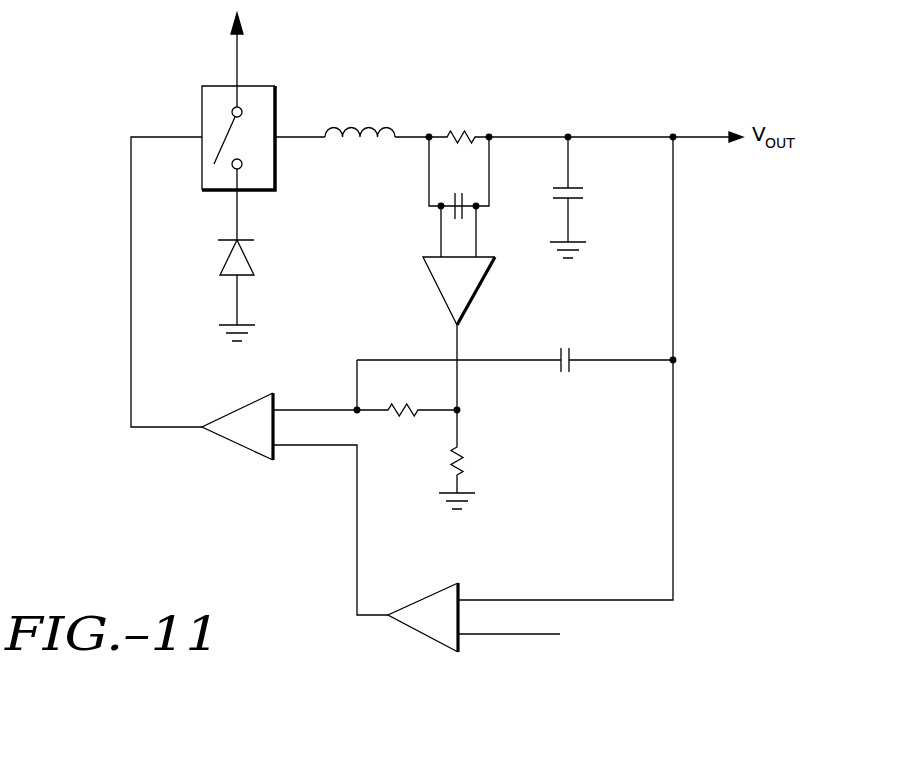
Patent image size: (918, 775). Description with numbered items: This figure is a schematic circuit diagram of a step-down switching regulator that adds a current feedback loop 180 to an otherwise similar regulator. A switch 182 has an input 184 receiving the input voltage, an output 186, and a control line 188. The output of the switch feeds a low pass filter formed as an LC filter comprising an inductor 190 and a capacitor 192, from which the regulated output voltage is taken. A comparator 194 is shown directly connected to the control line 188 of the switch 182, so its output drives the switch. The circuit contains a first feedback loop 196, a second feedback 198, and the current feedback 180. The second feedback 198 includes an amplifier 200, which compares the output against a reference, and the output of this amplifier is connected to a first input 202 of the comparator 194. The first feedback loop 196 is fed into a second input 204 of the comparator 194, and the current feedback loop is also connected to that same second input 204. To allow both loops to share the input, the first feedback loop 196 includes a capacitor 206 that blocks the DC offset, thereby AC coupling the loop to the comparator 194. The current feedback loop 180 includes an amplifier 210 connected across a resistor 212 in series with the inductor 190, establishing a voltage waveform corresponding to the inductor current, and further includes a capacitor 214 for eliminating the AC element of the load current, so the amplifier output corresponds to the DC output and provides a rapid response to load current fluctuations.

The current feedback loop 180 is at (459, 340).
The switch 182 is at (283, 108).
The input 184 is at (239, 52).
The output 186 is at (238, 218).
The control line 188 is at (168, 134).
The inductor 190 is at (362, 115).
The capacitor 192 is at (590, 178).
The comparator 194 is at (237, 461).
The first feedback loop 196 is at (500, 362).
The second feedback 198 is at (553, 599).
The amplifier 200 is at (413, 650).
The first input 202 is at (292, 456).
The second input 204 is at (291, 403).
The capacitor 206 is at (567, 381).
The amplifier 210 is at (495, 292).
The resistor 212 is at (467, 122).
The capacitor 214 is at (460, 190).